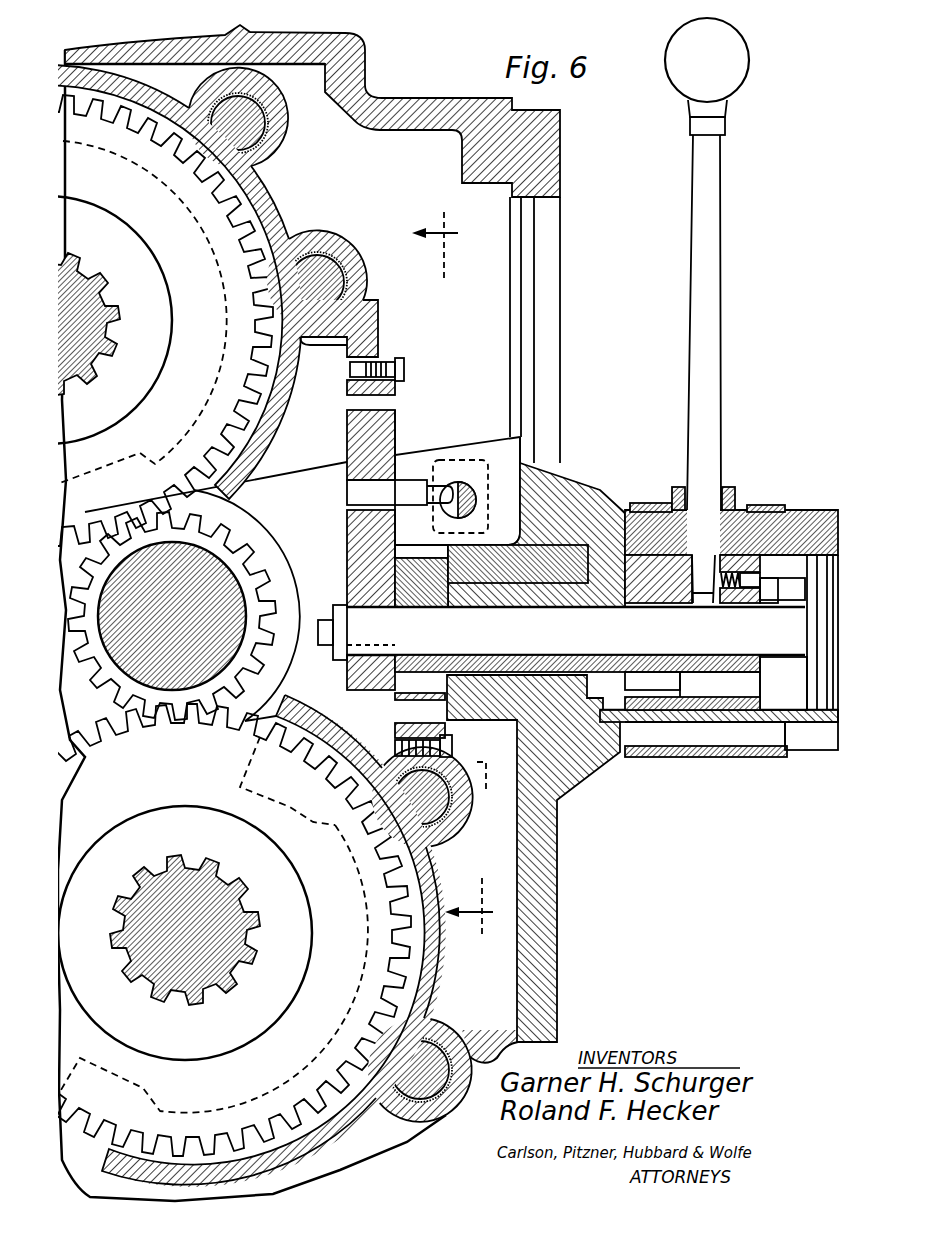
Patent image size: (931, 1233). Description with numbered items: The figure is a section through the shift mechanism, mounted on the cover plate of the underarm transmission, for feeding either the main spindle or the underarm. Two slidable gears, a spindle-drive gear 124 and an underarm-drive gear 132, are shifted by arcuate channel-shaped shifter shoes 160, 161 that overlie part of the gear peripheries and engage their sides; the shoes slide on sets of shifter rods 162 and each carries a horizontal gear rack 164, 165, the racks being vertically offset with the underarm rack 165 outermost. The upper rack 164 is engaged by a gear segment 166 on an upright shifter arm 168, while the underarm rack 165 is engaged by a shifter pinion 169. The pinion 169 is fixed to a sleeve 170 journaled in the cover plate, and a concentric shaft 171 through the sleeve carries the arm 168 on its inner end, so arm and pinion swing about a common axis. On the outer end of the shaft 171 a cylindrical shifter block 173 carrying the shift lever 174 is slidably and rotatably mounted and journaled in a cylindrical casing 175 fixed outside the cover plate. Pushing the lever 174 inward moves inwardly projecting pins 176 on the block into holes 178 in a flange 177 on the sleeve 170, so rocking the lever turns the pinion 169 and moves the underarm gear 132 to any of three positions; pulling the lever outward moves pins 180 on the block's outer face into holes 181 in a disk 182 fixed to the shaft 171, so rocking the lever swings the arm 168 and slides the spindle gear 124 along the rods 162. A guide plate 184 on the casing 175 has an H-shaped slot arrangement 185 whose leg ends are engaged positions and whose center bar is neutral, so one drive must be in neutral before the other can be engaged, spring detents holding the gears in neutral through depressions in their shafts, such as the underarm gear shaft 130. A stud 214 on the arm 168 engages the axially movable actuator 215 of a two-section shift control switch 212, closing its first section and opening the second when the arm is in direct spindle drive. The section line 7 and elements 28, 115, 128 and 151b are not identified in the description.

The section line 7- 7 is at (460, 573).
The housing 28 is at (364, 78).
The splined shaft 115 is at (113, 302).
The slidable gear 124 is at (264, 200).
The idler gear 128 is at (240, 549).
The slidable gear shaft 130 is at (243, 938).
The slidable gear 132 is at (413, 958).
The housing wall 151b is at (474, 445).
The shifter shoe 160 is at (275, 225).
The shifter shoe 161 is at (432, 988).
The shifter rods 162 is at (268, 128).
The gear rack 164 is at (397, 392).
The gear rack 165 is at (452, 733).
The gear segment 166 is at (347, 418).
The upright shifter arm 168 is at (347, 521).
The shifter pinion 169 is at (413, 551).
The sleeve 170 is at (477, 592).
The central shifter shaft 171 is at (717, 683).
The shifter block 173 is at (756, 570).
The shift lever 174 is at (720, 370).
The cylindrical casing 175 is at (796, 520).
The inwardly projecting pins 176 is at (612, 672).
The flange 177 is at (607, 556).
The holes 178 is at (575, 665).
The pins 180 is at (781, 598).
The holes 181 is at (812, 596).
The disk 182 is at (814, 692).
The guide plate 184 is at (757, 507).
The H-shaped slot arrangement 185 is at (680, 500).
The shift control switch 212 is at (493, 475).
The stud 214 is at (437, 487).
The actuator 215 is at (461, 484).